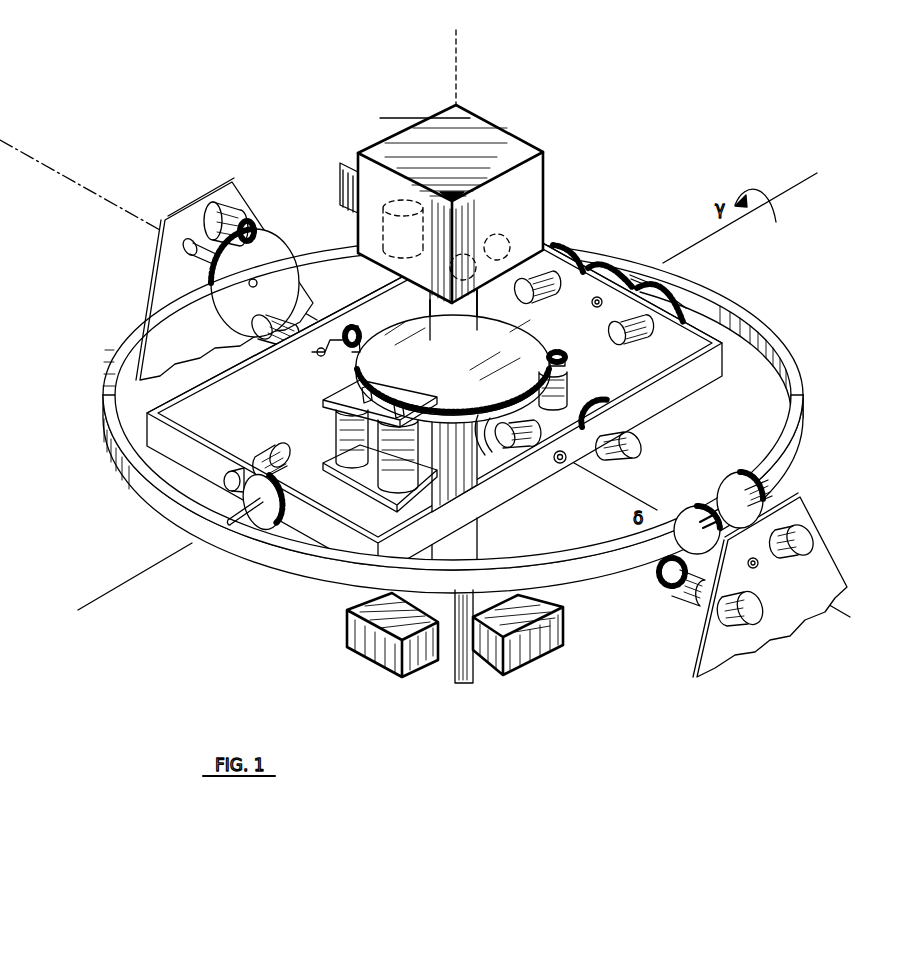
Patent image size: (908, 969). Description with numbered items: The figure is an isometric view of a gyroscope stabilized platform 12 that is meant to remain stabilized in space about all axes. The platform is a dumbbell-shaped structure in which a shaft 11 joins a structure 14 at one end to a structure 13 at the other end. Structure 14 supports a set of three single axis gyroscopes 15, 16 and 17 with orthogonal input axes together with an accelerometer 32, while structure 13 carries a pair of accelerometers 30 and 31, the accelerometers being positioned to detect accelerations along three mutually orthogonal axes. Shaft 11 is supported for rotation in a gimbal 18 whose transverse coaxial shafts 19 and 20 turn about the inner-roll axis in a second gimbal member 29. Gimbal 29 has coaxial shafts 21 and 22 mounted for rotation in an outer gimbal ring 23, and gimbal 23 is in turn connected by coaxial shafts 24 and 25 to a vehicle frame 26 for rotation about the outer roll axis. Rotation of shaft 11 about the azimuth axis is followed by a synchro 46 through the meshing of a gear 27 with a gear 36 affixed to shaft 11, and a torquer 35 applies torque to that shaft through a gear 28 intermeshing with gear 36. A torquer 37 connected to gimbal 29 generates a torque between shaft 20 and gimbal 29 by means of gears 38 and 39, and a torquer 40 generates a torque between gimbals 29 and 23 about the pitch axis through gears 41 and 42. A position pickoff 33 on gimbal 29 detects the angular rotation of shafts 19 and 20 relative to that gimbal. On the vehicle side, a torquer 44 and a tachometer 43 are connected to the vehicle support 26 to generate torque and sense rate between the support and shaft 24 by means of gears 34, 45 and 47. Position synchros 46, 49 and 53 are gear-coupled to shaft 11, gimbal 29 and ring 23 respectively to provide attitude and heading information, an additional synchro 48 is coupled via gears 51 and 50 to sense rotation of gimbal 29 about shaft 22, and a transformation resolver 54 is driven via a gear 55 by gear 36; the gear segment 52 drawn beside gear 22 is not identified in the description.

The shaft 11 is at (453, 314).
The gyroscope stabilized platform 12 is at (513, 124).
The structure 13 is at (463, 665).
The structure 14 is at (412, 152).
The single axis gyroscope 15 is at (388, 210).
The single axis gyroscope 16 is at (505, 240).
The single axis gyroscope 17 is at (472, 200).
The gimbal 18 is at (484, 478).
The coaxial shaft 19 is at (352, 336).
The coaxial shaft 20 is at (527, 447).
The coaxial shaft 21 is at (248, 508).
The coaxial shaft 22 is at (658, 298).
The outer gimbal ring 23 is at (590, 574).
The coaxial shaft 24 is at (752, 558).
The coaxial shaft 25 is at (205, 258).
The vehicle frame 26 is at (152, 278).
The gear 27 is at (400, 407).
The gear 28 is at (372, 390).
The second gimbal member 29 is at (688, 388).
The accelerometer 30 is at (532, 651).
The accelerometer 31 is at (378, 640).
The accelerometer 32 is at (347, 188).
The position pickoff 33 is at (267, 340).
The gear 34 is at (664, 578).
The torquer 35 is at (345, 440).
The gear 36 is at (453, 369).
The torquer 37 is at (638, 462).
The gear 38 is at (600, 400).
The gear 39 is at (561, 466).
The torquer 40 is at (290, 472).
The gear 41 is at (224, 481).
The gear 42 is at (266, 515).
The tachometer 43 is at (750, 606).
The torquer 44 is at (800, 547).
The gear 45 is at (775, 490).
The synchro 46 is at (377, 451).
The gear 47 is at (698, 505).
The synchro 48 is at (537, 297).
The position synchro 49 is at (628, 338).
The gear 50 is at (602, 262).
The gear 51 is at (553, 245).
The gear segment 52 is at (691, 306).
The position synchro 53 is at (196, 200).
The transformation resolver 54 is at (566, 388).
The gear 55 is at (562, 357).